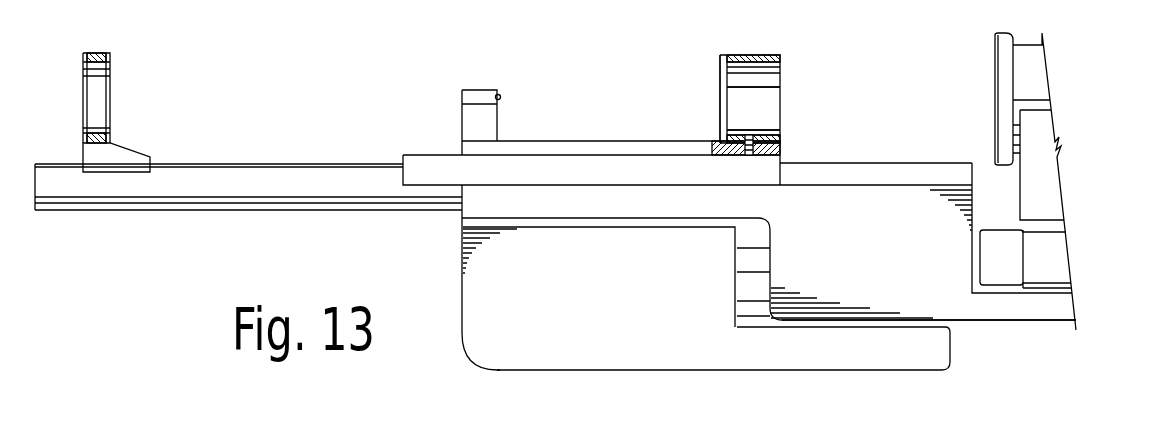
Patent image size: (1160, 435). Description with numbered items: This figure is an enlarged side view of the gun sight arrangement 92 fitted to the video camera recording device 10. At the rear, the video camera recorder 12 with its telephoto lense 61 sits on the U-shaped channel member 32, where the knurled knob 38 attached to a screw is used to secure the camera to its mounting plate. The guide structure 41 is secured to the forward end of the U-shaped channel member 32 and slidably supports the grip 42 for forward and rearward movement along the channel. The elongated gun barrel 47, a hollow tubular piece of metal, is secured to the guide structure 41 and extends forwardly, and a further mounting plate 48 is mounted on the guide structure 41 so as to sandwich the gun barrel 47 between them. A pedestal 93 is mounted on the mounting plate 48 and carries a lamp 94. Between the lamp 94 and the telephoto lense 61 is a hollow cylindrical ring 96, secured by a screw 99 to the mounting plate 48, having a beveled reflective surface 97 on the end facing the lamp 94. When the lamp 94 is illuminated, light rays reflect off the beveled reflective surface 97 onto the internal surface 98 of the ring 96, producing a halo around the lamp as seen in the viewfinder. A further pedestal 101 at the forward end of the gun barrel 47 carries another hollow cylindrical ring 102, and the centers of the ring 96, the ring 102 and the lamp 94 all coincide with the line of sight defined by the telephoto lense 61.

The video camera recording device 10 is at (1072, 346).
The video camera recorder 12 is at (1036, 300).
The U-shaped channel member 32 is at (988, 325).
The knurled knob 38 is at (655, 12).
The guide structure 41 is at (842, 335).
The grip 42 is at (650, 355).
The gun barrel 47 is at (245, 178).
The mounting plate 48 is at (565, 148).
The telephoto lense 61 is at (1026, 58).
The gun sight arrangement 92 is at (368, 100).
The pedestal 93 is at (483, 125).
The lamp 94 is at (502, 95).
The hollow cylindrical ring 96 is at (752, 54).
The beveled reflective surface 97 is at (725, 62).
The internal surface 98 is at (765, 99).
The screw 99 is at (750, 156).
The block 101 is at (120, 160).
The hollow cylindrical ring 102 is at (97, 53).